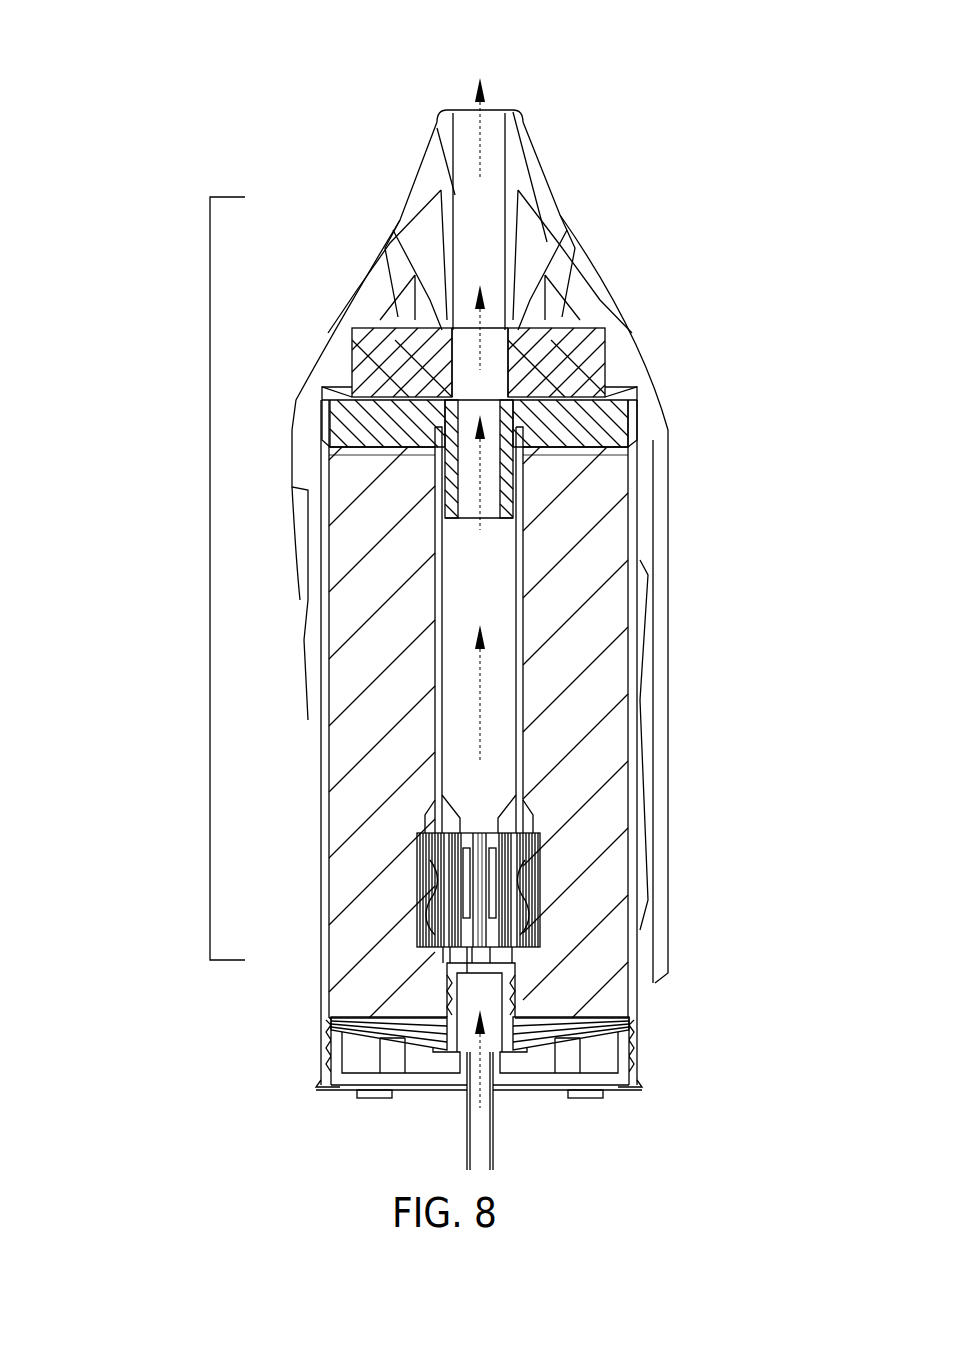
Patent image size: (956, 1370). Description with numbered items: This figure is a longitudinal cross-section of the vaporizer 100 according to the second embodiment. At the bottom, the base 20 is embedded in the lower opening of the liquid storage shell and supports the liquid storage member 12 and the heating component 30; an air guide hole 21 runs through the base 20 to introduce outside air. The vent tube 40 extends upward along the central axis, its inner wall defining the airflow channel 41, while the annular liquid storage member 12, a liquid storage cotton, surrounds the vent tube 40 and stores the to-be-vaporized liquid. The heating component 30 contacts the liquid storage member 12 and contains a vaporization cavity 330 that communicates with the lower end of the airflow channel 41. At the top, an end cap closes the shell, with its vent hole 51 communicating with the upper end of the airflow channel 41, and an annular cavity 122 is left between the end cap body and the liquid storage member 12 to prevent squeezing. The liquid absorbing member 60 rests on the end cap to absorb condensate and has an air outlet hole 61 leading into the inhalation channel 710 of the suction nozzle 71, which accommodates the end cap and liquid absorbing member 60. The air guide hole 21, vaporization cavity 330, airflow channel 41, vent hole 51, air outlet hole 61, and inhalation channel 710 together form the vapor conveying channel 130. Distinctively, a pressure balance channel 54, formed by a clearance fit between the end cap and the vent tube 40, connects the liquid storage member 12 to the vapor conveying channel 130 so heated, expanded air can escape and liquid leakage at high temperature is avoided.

The vaporizer 100 is at (505, 50).
The suction nozzle 71 is at (570, 232).
The inhalation channel 710 is at (470, 250).
The liquid absorbing member 60 is at (590, 342).
The air outlet hole 61 is at (458, 355).
The pressure balance channel 54 is at (527, 430).
The vent hole 51 is at (470, 466).
The liquid storage member 12 is at (600, 636).
The annular cavity 122 is at (578, 452).
The vent tube 40 is at (530, 738).
The airflow channel 41 is at (455, 650).
The heating component 30 is at (545, 872).
The vaporization cavity 330 is at (460, 870).
The air guide hole 21 is at (468, 1000).
The base 20 is at (630, 1055).
The vapor conveying channel 130 is at (210, 583).